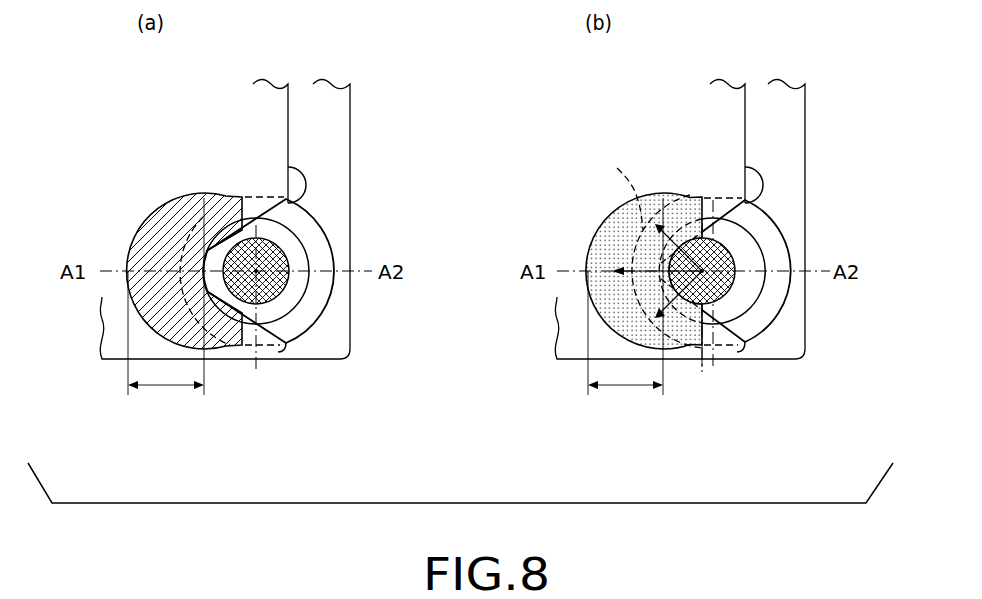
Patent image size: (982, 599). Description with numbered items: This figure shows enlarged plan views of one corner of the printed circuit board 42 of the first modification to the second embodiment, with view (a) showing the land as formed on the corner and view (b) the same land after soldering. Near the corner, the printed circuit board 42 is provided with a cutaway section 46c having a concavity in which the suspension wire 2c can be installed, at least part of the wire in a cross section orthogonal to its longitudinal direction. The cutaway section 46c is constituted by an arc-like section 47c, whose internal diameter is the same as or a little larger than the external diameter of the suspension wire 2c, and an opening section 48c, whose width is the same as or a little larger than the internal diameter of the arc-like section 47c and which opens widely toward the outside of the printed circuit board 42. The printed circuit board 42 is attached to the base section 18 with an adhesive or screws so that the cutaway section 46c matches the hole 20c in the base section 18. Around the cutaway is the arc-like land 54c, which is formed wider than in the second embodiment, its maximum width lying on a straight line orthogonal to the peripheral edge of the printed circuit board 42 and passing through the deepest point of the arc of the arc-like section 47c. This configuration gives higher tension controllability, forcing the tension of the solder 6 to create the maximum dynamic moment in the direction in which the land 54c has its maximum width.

The base section 18 is at (350, 118).
The arc-like land 54c is at (133, 242).
The hole 20c is at (320, 316).
The printed circuit board 42 is at (266, 352).
The suspension wire 2c is at (296, 247).
The cutaway section 46c is at (43, 131).
The arc-like section 47c is at (203, 217).
The opening section 48c is at (745, 170).
The solder 6 is at (604, 226).